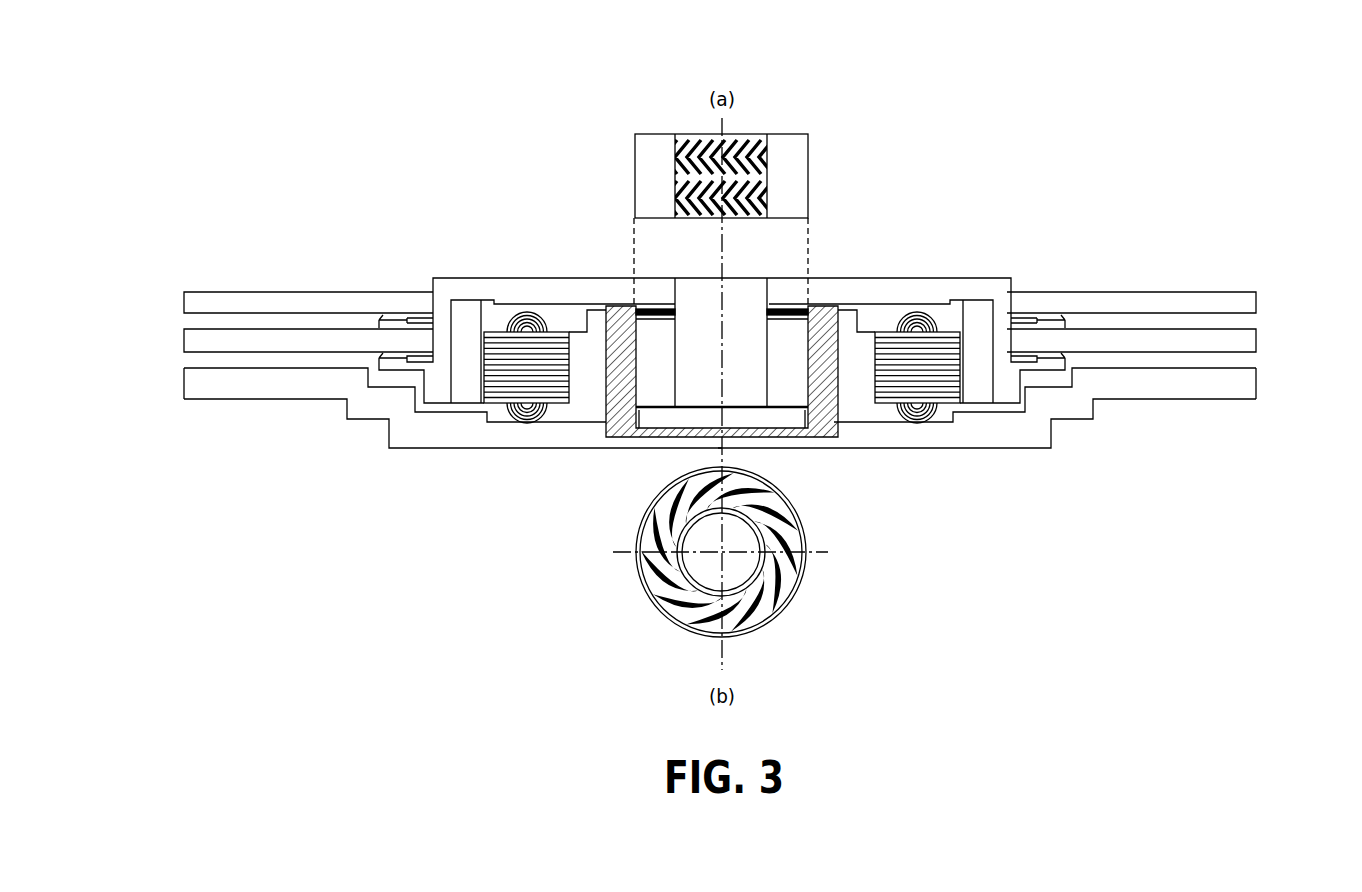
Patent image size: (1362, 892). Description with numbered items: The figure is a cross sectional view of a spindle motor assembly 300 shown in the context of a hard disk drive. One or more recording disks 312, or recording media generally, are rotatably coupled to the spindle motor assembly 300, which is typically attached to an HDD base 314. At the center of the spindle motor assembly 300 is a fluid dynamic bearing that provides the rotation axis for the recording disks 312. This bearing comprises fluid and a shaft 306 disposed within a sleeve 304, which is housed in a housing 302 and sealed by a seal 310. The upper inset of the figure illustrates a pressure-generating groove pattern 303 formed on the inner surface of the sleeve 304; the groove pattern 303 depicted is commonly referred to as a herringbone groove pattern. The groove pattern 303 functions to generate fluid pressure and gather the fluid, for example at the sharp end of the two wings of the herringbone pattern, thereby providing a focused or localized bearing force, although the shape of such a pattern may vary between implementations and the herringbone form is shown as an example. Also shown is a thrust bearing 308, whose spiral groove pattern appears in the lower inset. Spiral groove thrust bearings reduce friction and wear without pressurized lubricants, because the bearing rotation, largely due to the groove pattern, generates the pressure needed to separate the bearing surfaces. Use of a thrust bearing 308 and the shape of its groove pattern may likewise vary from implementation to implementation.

The spindle motor assembly 300 is at (383, 85).
The housing 302 is at (618, 313).
The pressure-generating groove pattern 303 is at (700, 142).
The sleeve 304 is at (797, 173).
The shaft 306 is at (745, 290).
The thrust bearing 308 is at (685, 414).
The seal 310 is at (655, 305).
The recording disk 312 is at (1245, 303).
The HDD base 314 is at (1245, 378).